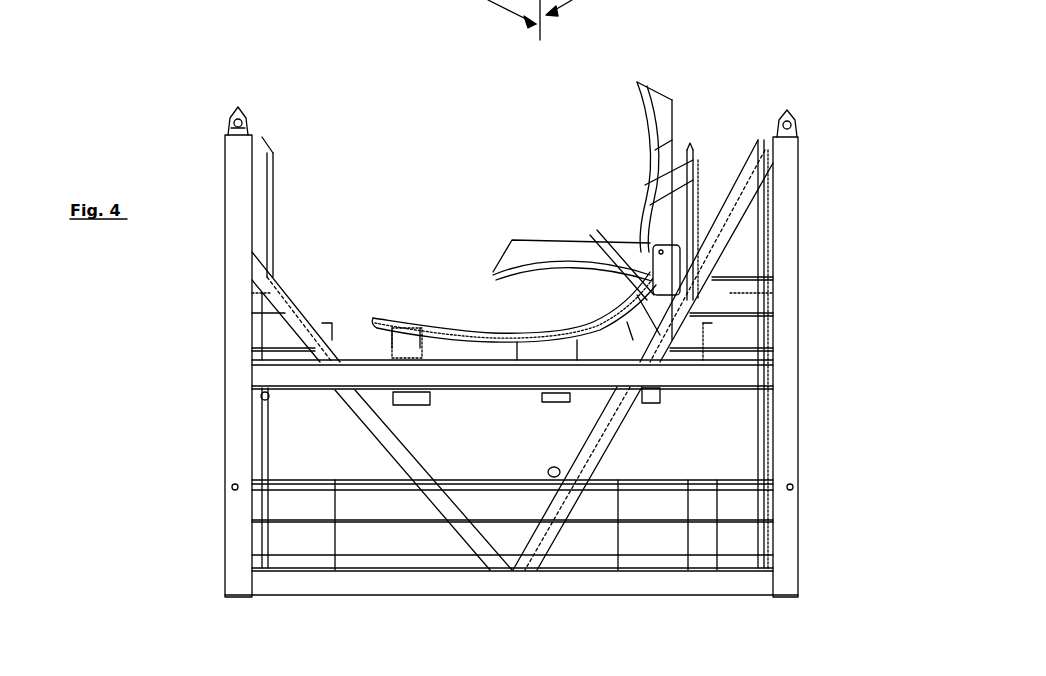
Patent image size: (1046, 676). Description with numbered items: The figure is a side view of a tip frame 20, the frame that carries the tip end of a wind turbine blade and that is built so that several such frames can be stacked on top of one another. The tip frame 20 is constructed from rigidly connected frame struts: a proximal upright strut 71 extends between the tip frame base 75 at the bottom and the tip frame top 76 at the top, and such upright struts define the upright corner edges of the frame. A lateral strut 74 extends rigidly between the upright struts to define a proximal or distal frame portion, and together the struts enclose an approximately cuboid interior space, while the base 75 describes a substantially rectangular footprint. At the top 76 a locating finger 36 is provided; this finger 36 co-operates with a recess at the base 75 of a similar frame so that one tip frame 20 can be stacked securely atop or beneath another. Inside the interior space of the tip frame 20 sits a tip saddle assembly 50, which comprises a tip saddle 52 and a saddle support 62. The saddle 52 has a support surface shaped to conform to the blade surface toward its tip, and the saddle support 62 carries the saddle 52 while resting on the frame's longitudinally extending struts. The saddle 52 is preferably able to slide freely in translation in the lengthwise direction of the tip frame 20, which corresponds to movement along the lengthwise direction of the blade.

The tip frame 20 is at (102, 118).
The locating finger 36 is at (235, 107).
The tip saddle assembly 50 is at (466, 207).
The tip saddle 52 is at (466, 322).
The saddle support 62 is at (645, 420).
The proximal upright strut 71 is at (238, 424).
The lateral strut 74 is at (712, 378).
The tip frame base 75 is at (170, 586).
The tip frame top 76 is at (846, 133).